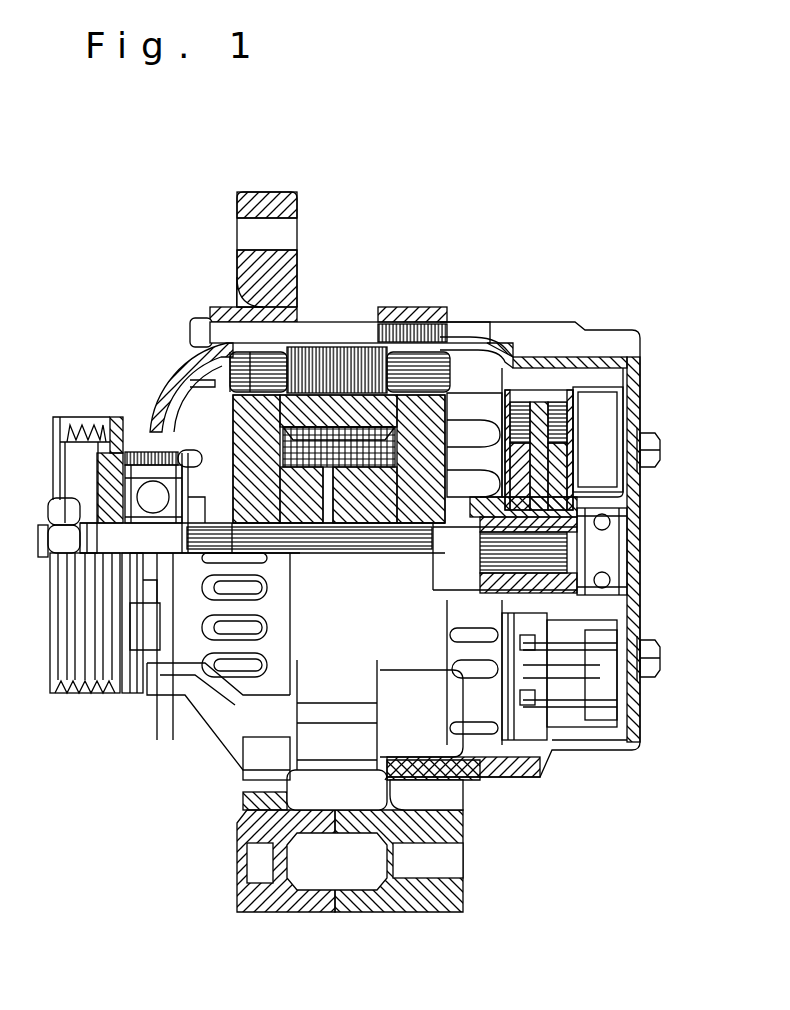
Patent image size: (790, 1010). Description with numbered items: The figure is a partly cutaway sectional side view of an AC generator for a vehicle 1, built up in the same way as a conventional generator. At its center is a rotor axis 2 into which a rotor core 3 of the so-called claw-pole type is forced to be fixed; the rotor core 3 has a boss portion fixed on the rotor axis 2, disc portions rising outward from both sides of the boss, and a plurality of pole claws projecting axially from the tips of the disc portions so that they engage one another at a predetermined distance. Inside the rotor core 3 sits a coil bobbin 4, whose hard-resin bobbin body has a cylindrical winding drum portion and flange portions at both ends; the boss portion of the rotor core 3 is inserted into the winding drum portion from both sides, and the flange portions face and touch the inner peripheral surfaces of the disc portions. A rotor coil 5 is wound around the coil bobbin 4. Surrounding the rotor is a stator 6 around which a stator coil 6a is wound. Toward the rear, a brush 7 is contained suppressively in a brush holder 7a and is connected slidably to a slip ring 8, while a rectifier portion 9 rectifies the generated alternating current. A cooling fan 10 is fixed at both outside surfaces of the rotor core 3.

The AC generator for a vehicle 1 is at (597, 320).
The rotor axis 2 is at (627, 557).
The rotor core 3 is at (335, 415).
The coil bobbin 4 is at (309, 328).
The rotor coil 5 is at (343, 345).
The stator 6 is at (306, 345).
The stator coil 6a is at (228, 373).
The brush 7 is at (553, 477).
The brush holder 7a is at (578, 412).
The slip ring 8 is at (623, 550).
The rectifier portion 9 is at (597, 670).
The cooling fan 10 is at (205, 440).